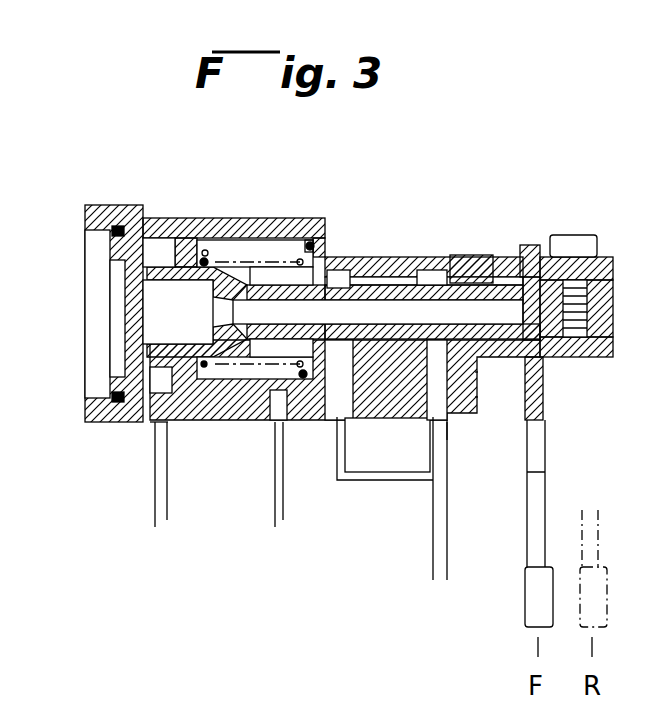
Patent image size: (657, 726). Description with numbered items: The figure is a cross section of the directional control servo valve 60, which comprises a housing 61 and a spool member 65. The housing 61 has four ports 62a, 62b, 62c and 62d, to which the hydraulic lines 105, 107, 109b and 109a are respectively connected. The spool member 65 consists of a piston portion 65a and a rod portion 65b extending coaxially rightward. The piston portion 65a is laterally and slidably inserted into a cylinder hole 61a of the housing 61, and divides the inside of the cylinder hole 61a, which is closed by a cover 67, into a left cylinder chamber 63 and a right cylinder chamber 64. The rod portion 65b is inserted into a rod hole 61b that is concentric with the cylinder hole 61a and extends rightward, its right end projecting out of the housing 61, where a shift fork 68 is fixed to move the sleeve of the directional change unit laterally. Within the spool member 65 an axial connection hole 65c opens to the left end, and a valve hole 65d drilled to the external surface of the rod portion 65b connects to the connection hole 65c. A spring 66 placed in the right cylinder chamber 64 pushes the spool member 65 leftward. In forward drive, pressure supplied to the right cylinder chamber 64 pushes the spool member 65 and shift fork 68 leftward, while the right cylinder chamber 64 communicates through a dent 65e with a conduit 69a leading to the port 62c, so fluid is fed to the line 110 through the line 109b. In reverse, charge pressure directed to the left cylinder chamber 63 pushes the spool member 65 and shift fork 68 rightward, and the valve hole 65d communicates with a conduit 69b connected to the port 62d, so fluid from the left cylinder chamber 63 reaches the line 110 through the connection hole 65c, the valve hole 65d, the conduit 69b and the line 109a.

The directional control servo valve 60 is at (395, 185).
The housing 61 is at (262, 277).
The cylinder hole 61a is at (222, 243).
The rod hole 61b is at (425, 280).
The port 62a is at (152, 424).
The port 62b is at (273, 432).
The port 62c is at (356, 426).
The port 62d is at (447, 422).
The left cylinder chamber 63 is at (162, 247).
The right cylinder chamber 64 is at (323, 245).
The spool member 65 is at (255, 282).
The piston portion 65a is at (200, 420).
The rod portion 65b is at (478, 280).
The connection hole 65c is at (482, 312).
The valve hole 65d is at (397, 290).
The dent 65e is at (345, 283).
The spring 66 is at (297, 400).
The cover 67 is at (137, 313).
The shift fork 68 is at (542, 493).
The conduit 69a is at (475, 397).
The conduit 69b is at (475, 372).
The hydraulic line 105 is at (155, 510).
The hydraulic line 107 is at (275, 510).
The line 109a is at (449, 455).
The line 109b is at (348, 482).
The line 110 is at (447, 565).